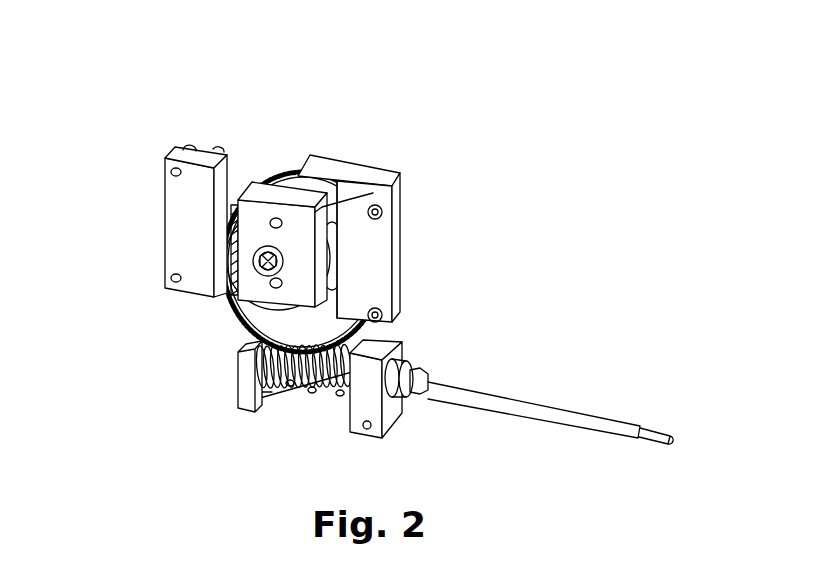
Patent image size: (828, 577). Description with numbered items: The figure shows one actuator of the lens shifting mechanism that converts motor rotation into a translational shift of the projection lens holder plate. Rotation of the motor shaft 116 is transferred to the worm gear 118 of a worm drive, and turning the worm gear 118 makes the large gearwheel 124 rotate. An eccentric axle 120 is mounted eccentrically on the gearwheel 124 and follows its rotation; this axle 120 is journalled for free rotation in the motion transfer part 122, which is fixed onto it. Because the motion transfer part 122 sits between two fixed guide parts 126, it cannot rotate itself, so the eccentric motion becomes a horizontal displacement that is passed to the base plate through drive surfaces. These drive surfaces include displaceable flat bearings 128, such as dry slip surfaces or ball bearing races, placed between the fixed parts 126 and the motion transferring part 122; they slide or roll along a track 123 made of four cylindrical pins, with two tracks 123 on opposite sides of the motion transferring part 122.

The motor shaft 116 is at (478, 405).
The worm gear 118 is at (277, 387).
The eccentric axle 120 is at (262, 262).
The motion transfer part 122 is at (288, 205).
The track 123 is at (233, 205).
The large gearwheel 124 is at (315, 331).
The fixed guide parts 126 is at (375, 287).
The flat bearings 128 is at (368, 208).